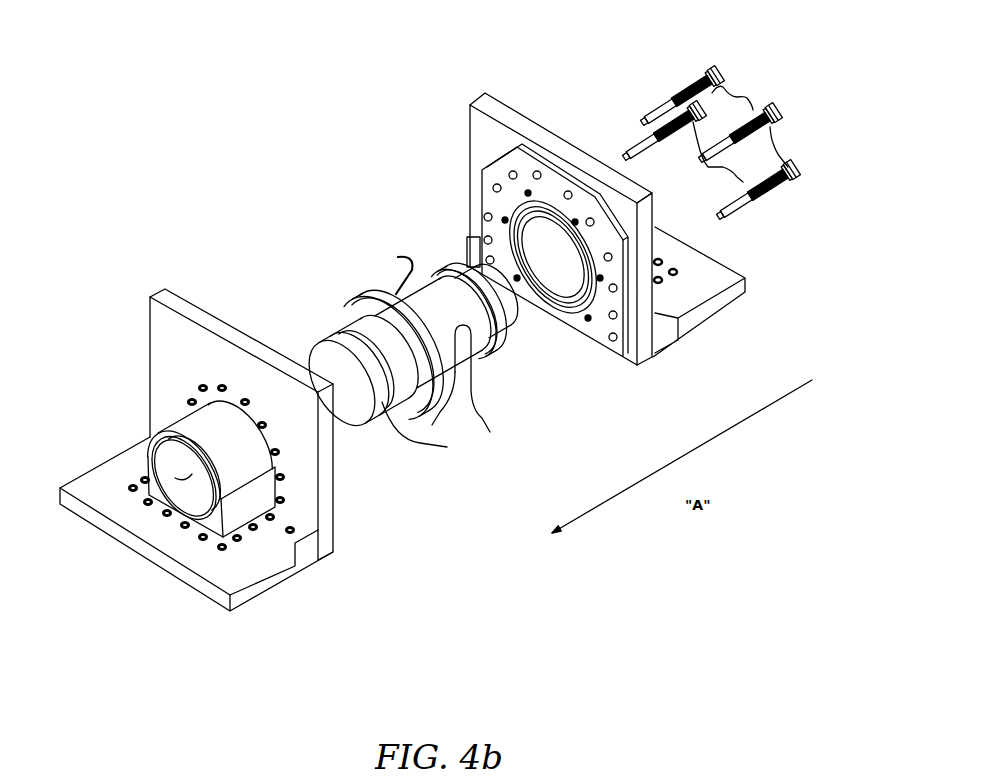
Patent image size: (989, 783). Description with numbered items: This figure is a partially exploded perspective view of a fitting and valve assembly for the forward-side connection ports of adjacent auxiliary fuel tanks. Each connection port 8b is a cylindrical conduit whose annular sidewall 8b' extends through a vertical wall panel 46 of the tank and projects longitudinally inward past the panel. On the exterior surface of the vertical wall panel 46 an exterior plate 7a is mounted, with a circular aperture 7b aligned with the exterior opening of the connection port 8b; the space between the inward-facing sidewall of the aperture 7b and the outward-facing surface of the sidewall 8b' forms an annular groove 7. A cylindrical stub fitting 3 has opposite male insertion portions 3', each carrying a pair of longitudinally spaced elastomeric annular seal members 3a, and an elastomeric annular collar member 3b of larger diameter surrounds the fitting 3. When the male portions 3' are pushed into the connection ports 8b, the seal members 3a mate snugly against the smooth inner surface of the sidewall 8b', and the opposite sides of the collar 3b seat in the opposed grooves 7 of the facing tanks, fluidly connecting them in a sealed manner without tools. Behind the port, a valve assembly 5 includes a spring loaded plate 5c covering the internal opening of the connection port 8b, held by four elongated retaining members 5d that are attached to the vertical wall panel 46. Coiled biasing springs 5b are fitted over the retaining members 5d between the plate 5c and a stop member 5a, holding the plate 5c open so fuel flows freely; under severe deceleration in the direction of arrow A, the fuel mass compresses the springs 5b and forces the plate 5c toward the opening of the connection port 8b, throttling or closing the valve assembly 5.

The cylindrical stub fitting 3 is at (412, 322).
The male insertion portions 3' is at (352, 310).
The annular seal members 3a is at (436, 396).
The annular collar member 3b is at (385, 260).
The valve assembly 5 is at (777, 143).
The stop member 5a is at (636, 153).
The coiled biasing springs 5b is at (677, 108).
The spring loaded plate 5c is at (737, 113).
The elongated retaining members 5d is at (727, 217).
The annular groove 7 is at (522, 212).
The exterior plate 7a is at (603, 248).
The circular aperture 7b is at (508, 238).
The connection port 8b is at (334, 417).
The annular sidewall 8b' is at (553, 317).
The vertical wall panels 46 is at (470, 172).